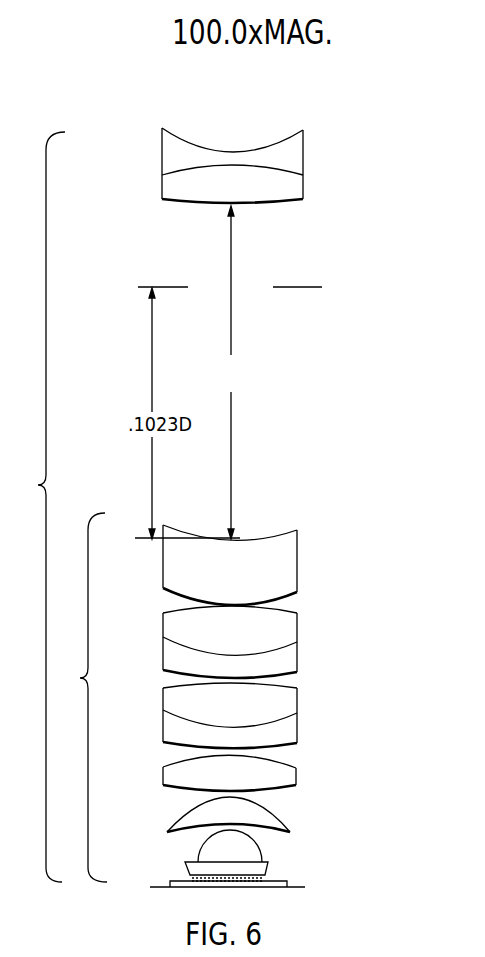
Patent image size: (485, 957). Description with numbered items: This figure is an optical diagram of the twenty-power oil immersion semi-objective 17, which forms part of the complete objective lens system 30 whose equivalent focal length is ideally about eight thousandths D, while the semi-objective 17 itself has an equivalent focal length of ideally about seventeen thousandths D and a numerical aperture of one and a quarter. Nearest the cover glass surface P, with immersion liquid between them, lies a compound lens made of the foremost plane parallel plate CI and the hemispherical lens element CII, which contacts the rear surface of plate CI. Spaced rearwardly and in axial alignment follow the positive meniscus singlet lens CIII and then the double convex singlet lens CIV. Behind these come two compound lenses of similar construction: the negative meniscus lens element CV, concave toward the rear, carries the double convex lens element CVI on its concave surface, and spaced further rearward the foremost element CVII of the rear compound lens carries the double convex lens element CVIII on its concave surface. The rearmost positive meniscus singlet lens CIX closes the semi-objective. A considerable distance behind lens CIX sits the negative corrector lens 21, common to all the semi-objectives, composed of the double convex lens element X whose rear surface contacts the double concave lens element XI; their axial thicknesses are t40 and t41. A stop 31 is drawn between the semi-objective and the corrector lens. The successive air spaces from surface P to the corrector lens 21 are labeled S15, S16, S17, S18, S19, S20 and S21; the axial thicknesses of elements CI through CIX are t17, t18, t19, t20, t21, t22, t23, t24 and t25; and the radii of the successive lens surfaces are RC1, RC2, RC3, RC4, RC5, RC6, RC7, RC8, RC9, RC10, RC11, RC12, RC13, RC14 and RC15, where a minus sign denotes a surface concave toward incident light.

The negative corrector lens 21 is at (209, 165).
The aperture stop 31 is at (160, 287).
The objective lens system 30 is at (38, 507).
The semi-objective 17 is at (82, 697).
The cover glass surface P is at (163, 884).
The air space S15 is at (217, 886).
The air space S16 is at (258, 838).
The air space S17 is at (245, 795).
The air space S18 is at (290, 755).
The air space S19 is at (292, 681).
The air space S20 is at (292, 604).
The air space S21 is at (236, 372).
The lens surface radius RC1 is at (295, 887).
The lens surface radius RC2 is at (268, 865).
The lens surface radius RC3 is at (265, 850).
The lens surface radius RC4 is at (265, 833).
The lens surface radius RC5 is at (286, 829).
The lens surface radius RC6 is at (292, 789).
The lens surface radius RC7 is at (294, 763).
The lens surface radius RC8 is at (293, 741).
The lens surface radius RC9 is at (296, 714).
The lens surface radius RC10 is at (296, 686).
The lens surface radius RC11 is at (293, 672).
The lens surface radius RC12 is at (296, 645).
The lens surface radius RC13 is at (298, 612).
The lens surface radius RC14 is at (291, 597).
The lens surface radius RC15 is at (291, 530).
The axial thickness t17 is at (230, 868).
The axial thickness t18 is at (226, 855).
The axial thickness t19 is at (226, 818).
The axial thickness t20 is at (236, 782).
The axial thickness t21 is at (272, 739).
The axial thickness t22 is at (236, 715).
The axial thickness t23 is at (272, 668).
The axial thickness t24 is at (236, 644).
The axial thickness t25 is at (236, 580).
The axial thickness t40 is at (236, 190).
The axial thickness t41 is at (224, 158).
The plane parallel plate CI is at (183, 866).
The hemispherical lens element CII is at (198, 852).
The positive meniscus singlet lens CIII is at (170, 830).
The double convex singlet lens CIV is at (165, 778).
The negative meniscus lens element CV is at (230, 739).
The double convex lens element CVI is at (230, 713).
The foremost element of rear compound lens CVII is at (203, 665).
The double convex lens element CVIII is at (230, 639).
The positive meniscus singlet lens CIX is at (230, 565).
The double convex lens element X is at (171, 190).
The double concave lens element XI is at (172, 160).